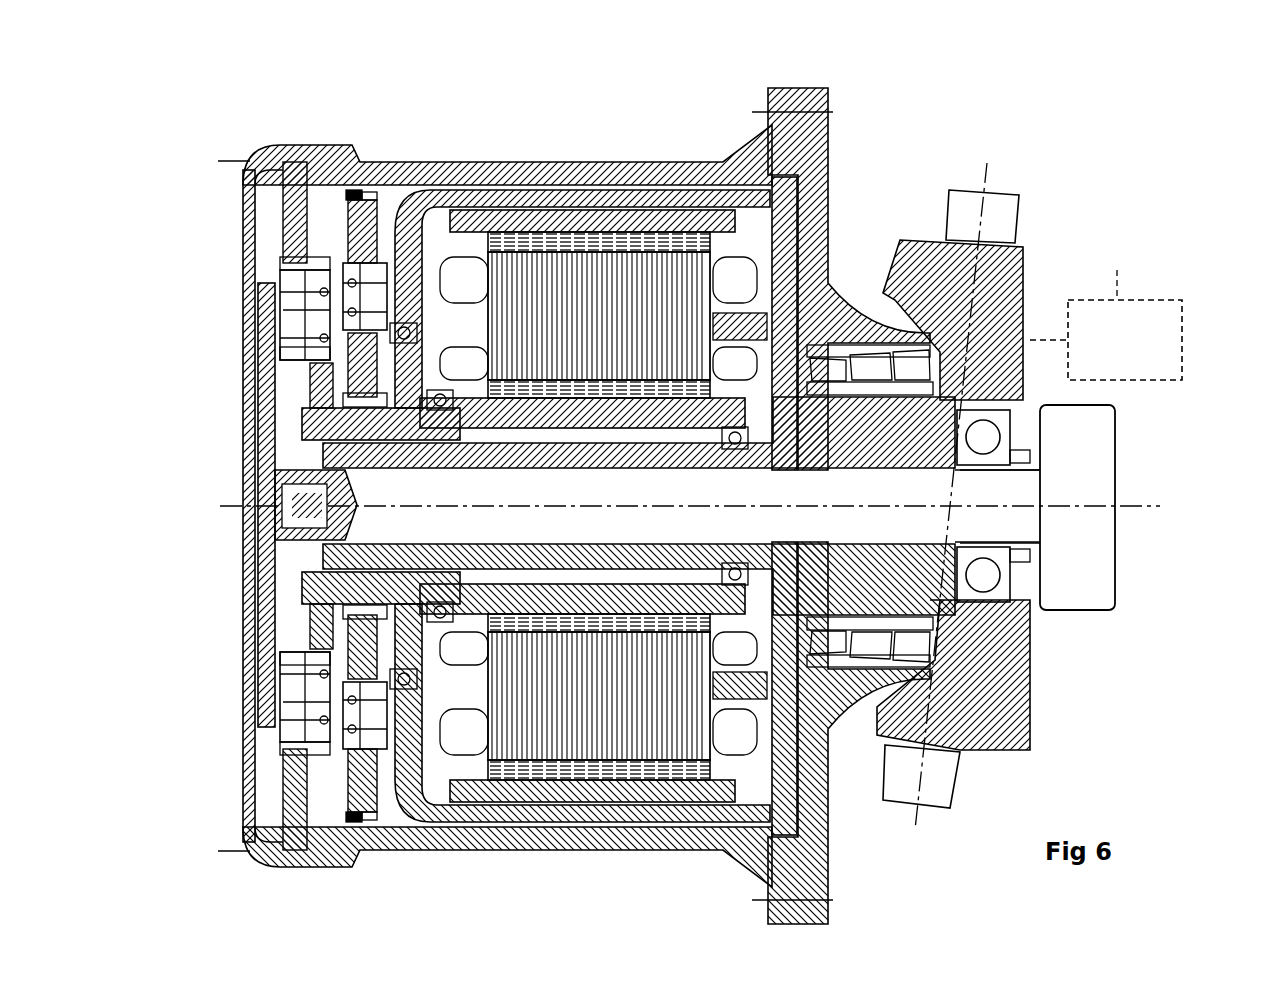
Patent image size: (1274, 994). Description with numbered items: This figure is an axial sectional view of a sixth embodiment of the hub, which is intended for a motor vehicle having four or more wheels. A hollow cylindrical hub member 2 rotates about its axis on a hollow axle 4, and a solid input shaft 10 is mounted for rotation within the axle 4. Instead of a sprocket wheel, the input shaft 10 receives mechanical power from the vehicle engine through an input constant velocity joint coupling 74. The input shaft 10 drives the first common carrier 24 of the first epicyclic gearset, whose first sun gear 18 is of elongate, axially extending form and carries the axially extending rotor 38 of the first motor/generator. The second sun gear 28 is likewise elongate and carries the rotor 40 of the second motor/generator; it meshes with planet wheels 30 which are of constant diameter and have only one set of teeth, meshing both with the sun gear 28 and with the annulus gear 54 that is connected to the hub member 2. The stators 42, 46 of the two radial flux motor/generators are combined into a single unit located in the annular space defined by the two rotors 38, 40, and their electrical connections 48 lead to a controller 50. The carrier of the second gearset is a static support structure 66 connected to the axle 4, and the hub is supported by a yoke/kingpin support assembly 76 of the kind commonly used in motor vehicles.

The hub member 2 is at (470, 170).
The axle 4 is at (255, 566).
The input shaft 10 is at (1003, 493).
The first sun gear 18 is at (507, 412).
The first common carrier 24 is at (258, 468).
The second sun gear 28 is at (833, 112).
The planet wheels 30 is at (378, 160).
The rotor of first motor/generator 38 is at (700, 222).
The rotor of second motor/generator 40 is at (575, 240).
The stator of first motor/generator 42 is at (505, 275).
The stator of second motor/generator 46 is at (597, 215).
The electrical connections 48 is at (782, 303).
The controller 50 is at (1106, 325).
The second integral annulus gear 54 is at (360, 160).
The static support structure 66 is at (422, 212).
The input constant velocity joint coupling 74 is at (1083, 522).
The yoke/kingpin support assembly 76 is at (1003, 282).